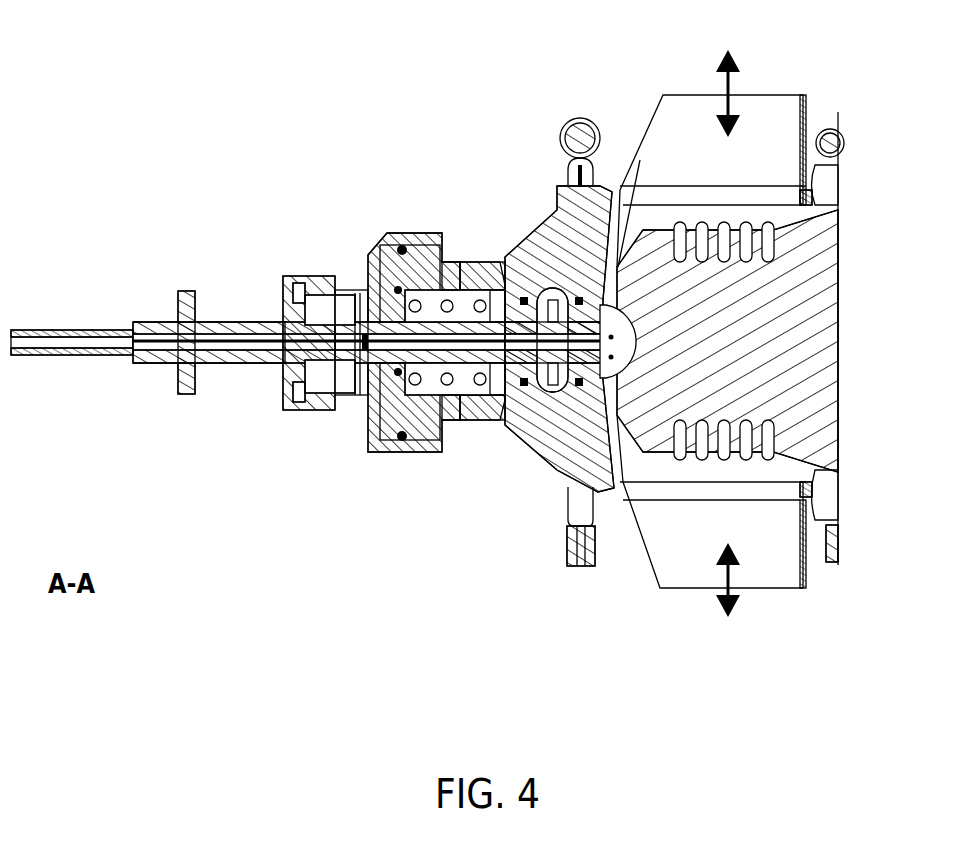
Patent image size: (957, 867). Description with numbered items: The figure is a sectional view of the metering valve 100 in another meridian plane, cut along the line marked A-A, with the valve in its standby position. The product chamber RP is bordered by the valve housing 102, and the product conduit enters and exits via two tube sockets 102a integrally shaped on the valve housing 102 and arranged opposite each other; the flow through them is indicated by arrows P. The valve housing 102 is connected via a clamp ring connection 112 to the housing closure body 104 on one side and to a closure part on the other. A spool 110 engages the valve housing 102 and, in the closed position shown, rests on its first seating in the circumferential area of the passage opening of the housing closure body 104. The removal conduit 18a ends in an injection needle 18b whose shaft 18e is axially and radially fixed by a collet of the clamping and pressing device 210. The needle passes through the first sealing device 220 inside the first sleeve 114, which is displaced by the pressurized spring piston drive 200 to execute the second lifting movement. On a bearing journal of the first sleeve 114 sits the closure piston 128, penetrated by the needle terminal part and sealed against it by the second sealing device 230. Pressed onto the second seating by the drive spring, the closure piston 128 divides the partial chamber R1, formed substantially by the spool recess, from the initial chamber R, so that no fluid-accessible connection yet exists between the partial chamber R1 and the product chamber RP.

The metering valve 100 is at (258, 205).
The removal conduit 18a is at (75, 342).
The shaft 18e is at (212, 355).
The injection needle 18b is at (368, 345).
The clamping and pressing device 210 is at (306, 263).
The spring piston drive 200 is at (402, 226).
The first sealing device 220 is at (517, 298).
The second sealing device 230 is at (547, 296).
The clamp ring connection 112 is at (583, 122).
The spool 110 is at (627, 303).
The valve housing 102 is at (808, 198).
The tube sockets 102a is at (803, 122).
The closure piston 128 is at (603, 322).
The first sleeve 114 is at (540, 415).
The housing closure body 104 is at (557, 385).
The initial chamber R is at (598, 357).
The partial chamber R1 is at (607, 362).
The pressure direction P is at (737, 336).
The product chamber RP is at (668, 215).